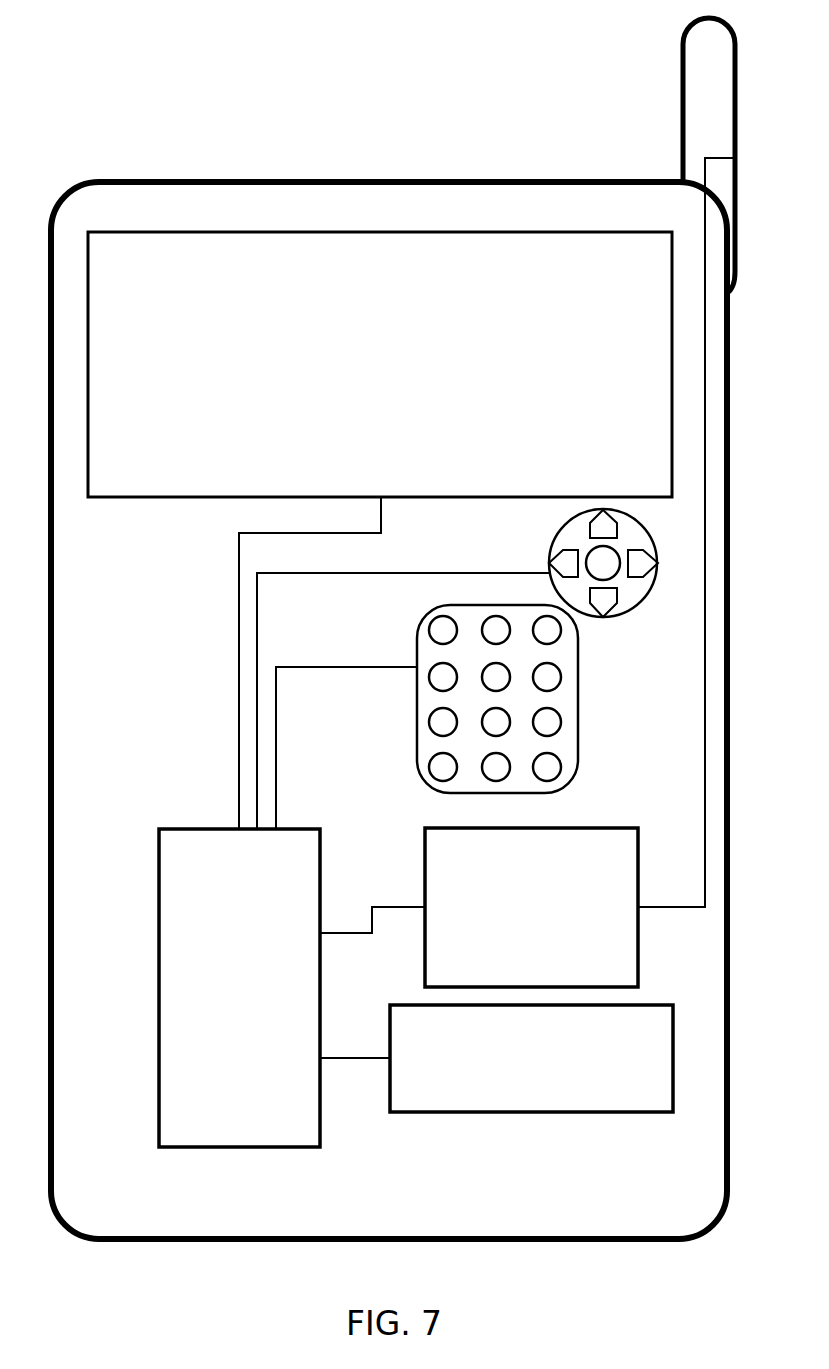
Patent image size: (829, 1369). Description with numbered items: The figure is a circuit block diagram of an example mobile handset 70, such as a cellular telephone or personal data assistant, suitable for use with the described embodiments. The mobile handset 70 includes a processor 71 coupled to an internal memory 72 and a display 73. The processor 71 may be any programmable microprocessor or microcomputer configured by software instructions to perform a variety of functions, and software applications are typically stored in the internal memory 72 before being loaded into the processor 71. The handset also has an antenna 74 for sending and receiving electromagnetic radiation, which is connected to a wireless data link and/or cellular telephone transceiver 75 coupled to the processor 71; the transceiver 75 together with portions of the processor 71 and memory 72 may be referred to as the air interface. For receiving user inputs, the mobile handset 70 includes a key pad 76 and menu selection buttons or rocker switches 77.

The mobile handset 70 is at (339, 181).
The processor 71 is at (258, 1000).
The internal memory 72 is at (546, 1082).
The display 73 is at (378, 370).
The antenna 74 is at (683, 50).
The cellular telephone transceiver 75 is at (546, 918).
The key pad 76 is at (578, 753).
The rocker switches 77 is at (605, 617).